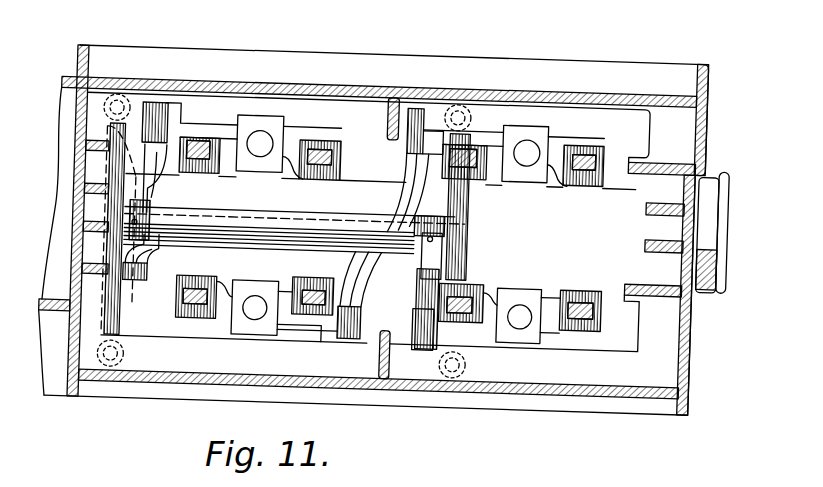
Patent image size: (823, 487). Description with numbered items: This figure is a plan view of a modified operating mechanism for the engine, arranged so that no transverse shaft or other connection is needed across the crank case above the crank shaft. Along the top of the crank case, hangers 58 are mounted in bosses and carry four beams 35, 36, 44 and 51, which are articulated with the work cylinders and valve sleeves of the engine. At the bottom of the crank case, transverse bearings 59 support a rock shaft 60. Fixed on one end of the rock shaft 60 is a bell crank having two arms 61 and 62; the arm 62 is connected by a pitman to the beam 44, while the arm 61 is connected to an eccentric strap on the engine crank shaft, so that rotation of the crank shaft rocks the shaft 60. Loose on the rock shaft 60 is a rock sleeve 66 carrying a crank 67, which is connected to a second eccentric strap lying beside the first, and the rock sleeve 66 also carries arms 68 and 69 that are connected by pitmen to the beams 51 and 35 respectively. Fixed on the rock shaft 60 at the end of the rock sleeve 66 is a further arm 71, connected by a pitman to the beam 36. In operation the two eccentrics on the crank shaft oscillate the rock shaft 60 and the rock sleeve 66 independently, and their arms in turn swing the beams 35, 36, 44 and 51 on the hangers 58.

The beam 35 is at (220, 274).
The beam 36 is at (553, 291).
The beam 44 is at (292, 139).
The beam 51 is at (569, 184).
The hanger 58 is at (254, 121).
The transverse bearing 59 is at (470, 200).
The rock shaft 60 is at (312, 218).
The bell crank arm 61 is at (138, 199).
The bell crank arm 62 is at (165, 178).
The rock sleeve 66 is at (252, 213).
The crank 67 is at (158, 254).
The arm 68 is at (412, 189).
The arm 69 is at (360, 273).
The arm 71 is at (428, 291).